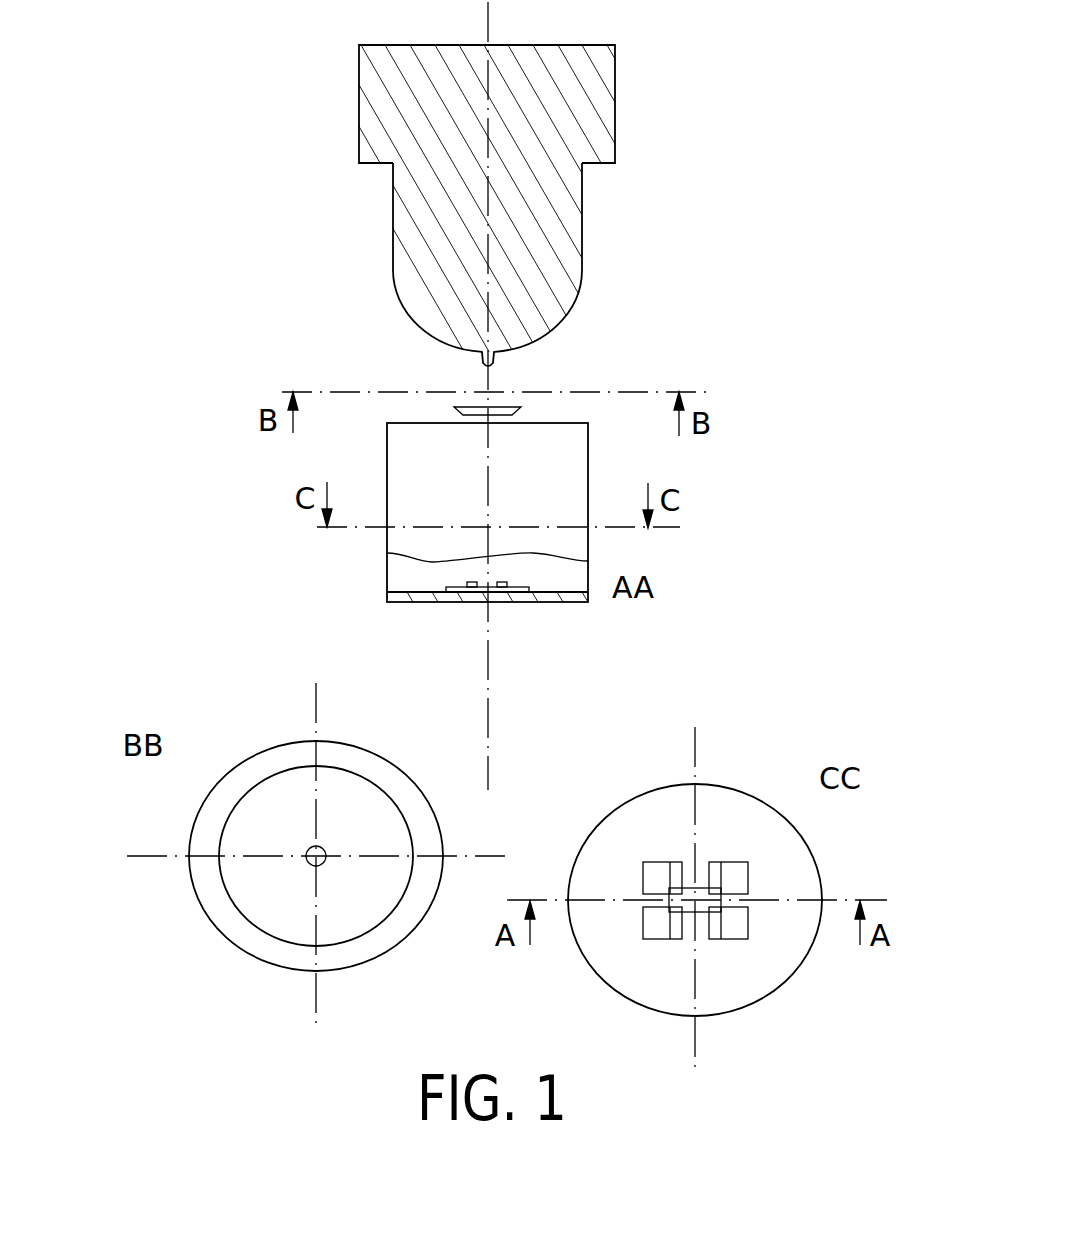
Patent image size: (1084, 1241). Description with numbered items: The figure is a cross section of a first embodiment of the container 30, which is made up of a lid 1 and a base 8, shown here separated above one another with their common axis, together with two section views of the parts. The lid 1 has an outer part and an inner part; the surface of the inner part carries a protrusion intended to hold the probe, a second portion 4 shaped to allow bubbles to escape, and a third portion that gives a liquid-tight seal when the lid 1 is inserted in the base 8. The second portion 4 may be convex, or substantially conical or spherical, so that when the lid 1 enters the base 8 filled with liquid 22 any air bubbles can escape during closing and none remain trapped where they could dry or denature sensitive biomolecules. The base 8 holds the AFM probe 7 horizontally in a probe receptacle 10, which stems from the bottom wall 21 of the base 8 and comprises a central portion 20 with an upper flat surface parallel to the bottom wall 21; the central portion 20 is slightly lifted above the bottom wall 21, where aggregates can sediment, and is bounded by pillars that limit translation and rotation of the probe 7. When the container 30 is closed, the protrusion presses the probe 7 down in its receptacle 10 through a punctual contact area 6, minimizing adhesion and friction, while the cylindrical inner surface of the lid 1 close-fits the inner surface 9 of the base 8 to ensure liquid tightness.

The lid 1 is at (328, 87).
The second portion 4 is at (404, 307).
The contact area 6 is at (482, 362).
The AFM probe 7 is at (545, 398).
The base 8 is at (315, 547).
The inner surface 9 is at (589, 549).
The probe receptacle 10 is at (686, 856).
The central portion 20 is at (697, 905).
The bottom wall 21 is at (522, 590).
The liquid 22 is at (568, 572).
The container 30 is at (258, 359).